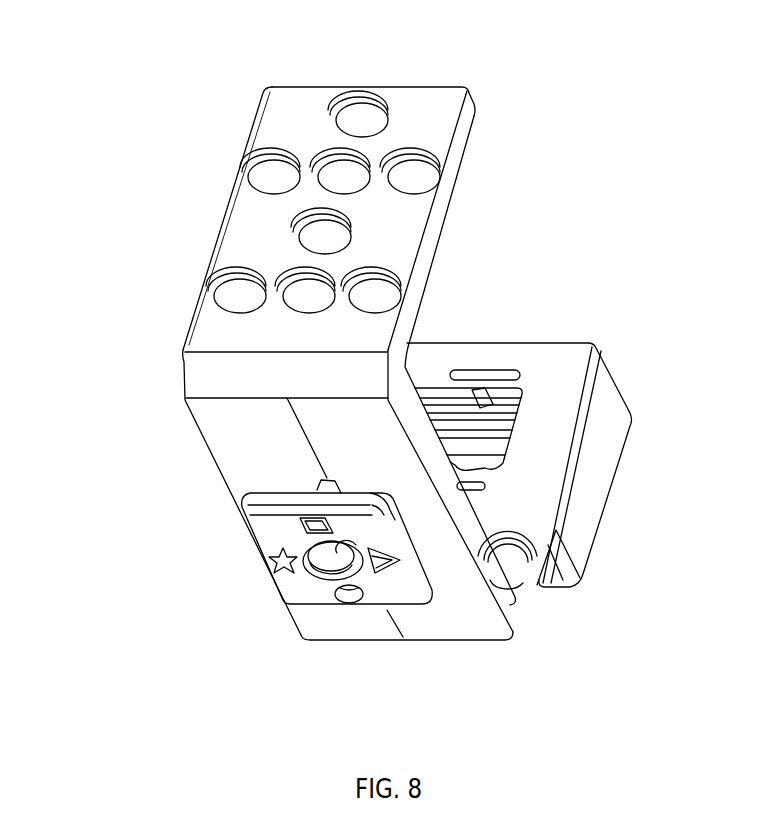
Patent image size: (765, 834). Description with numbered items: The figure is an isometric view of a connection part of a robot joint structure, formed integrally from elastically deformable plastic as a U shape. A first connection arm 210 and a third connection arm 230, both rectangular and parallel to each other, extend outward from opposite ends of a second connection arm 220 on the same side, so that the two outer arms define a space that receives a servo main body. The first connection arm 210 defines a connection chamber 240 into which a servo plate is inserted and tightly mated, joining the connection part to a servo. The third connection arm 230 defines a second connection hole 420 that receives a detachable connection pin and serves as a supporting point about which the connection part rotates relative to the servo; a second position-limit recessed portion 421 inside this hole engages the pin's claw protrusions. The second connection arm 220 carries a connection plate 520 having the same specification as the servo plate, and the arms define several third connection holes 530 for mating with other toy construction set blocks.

The first connection arm 210 is at (517, 577).
The second connection arm 220 is at (440, 553).
The third connection arm 230 is at (257, 242).
The connection chamber 240 is at (535, 422).
The second connection hole 420 is at (313, 177).
The second position-limit recessed portion 421 is at (328, 145).
The connection plate 520 is at (277, 542).
The third connection hole 530 is at (232, 303).